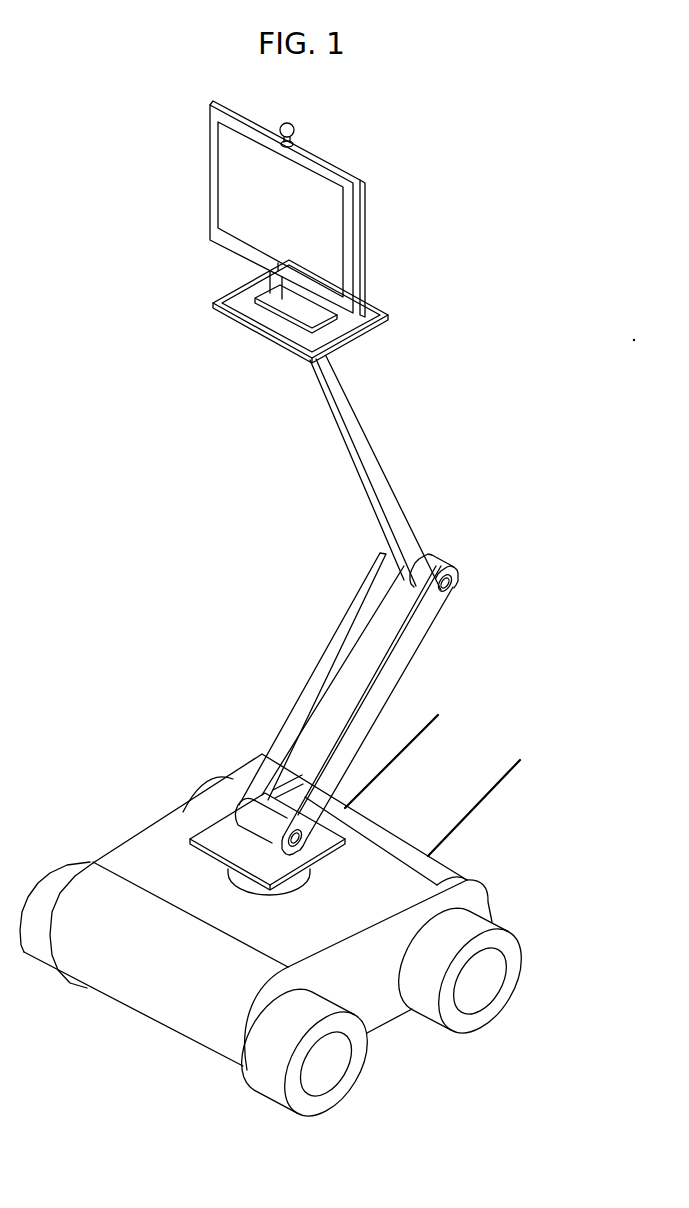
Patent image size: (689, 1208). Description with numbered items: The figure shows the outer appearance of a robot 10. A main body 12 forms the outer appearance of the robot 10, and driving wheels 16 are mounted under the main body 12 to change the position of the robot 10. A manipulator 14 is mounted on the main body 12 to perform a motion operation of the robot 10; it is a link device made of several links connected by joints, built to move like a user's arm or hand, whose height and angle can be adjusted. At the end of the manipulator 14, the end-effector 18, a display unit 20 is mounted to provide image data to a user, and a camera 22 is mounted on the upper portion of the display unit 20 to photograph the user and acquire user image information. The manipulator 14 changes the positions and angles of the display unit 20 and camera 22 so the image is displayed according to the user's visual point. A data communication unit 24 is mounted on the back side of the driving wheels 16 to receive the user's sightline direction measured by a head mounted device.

The robot 10 is at (94, 578).
The main body 12 is at (158, 841).
The manipulator 14 is at (401, 518).
The driving wheels 16 is at (512, 962).
The end-effector 18 is at (387, 307).
The display unit 20 is at (231, 187).
The camera 22 is at (296, 129).
The data communication unit 24 is at (510, 777).